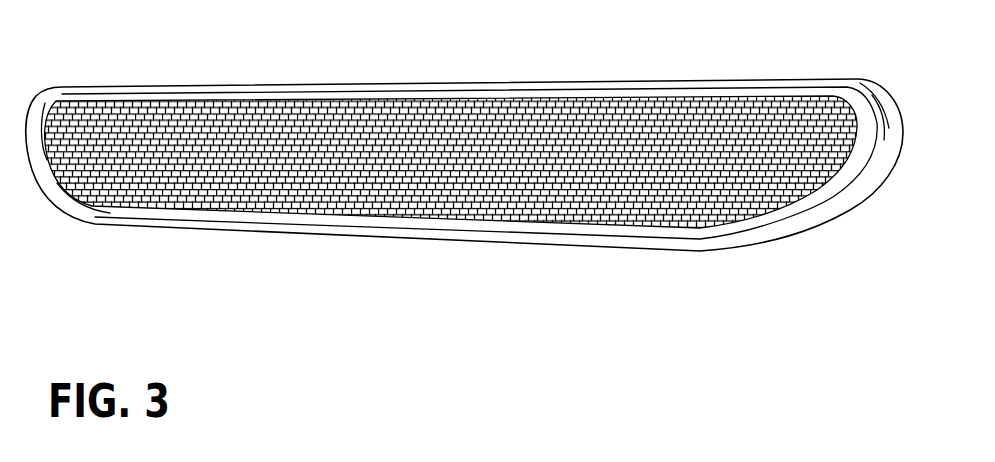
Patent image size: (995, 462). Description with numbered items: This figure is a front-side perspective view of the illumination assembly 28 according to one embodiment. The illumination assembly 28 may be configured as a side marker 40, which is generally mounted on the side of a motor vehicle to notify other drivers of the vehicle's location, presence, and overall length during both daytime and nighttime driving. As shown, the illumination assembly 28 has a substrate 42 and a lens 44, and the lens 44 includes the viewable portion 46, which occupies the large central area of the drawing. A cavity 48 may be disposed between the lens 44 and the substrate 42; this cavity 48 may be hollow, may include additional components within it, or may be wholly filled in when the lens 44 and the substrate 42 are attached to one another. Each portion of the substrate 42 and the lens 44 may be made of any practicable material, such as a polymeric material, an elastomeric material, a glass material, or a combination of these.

The illumination assembly 28 is at (411, 80).
The side marker 40 is at (797, 199).
The substrate 42 is at (878, 112).
The lens 44 is at (567, 226).
The viewable portion 46 is at (419, 187).
The cavity 48 is at (118, 160).